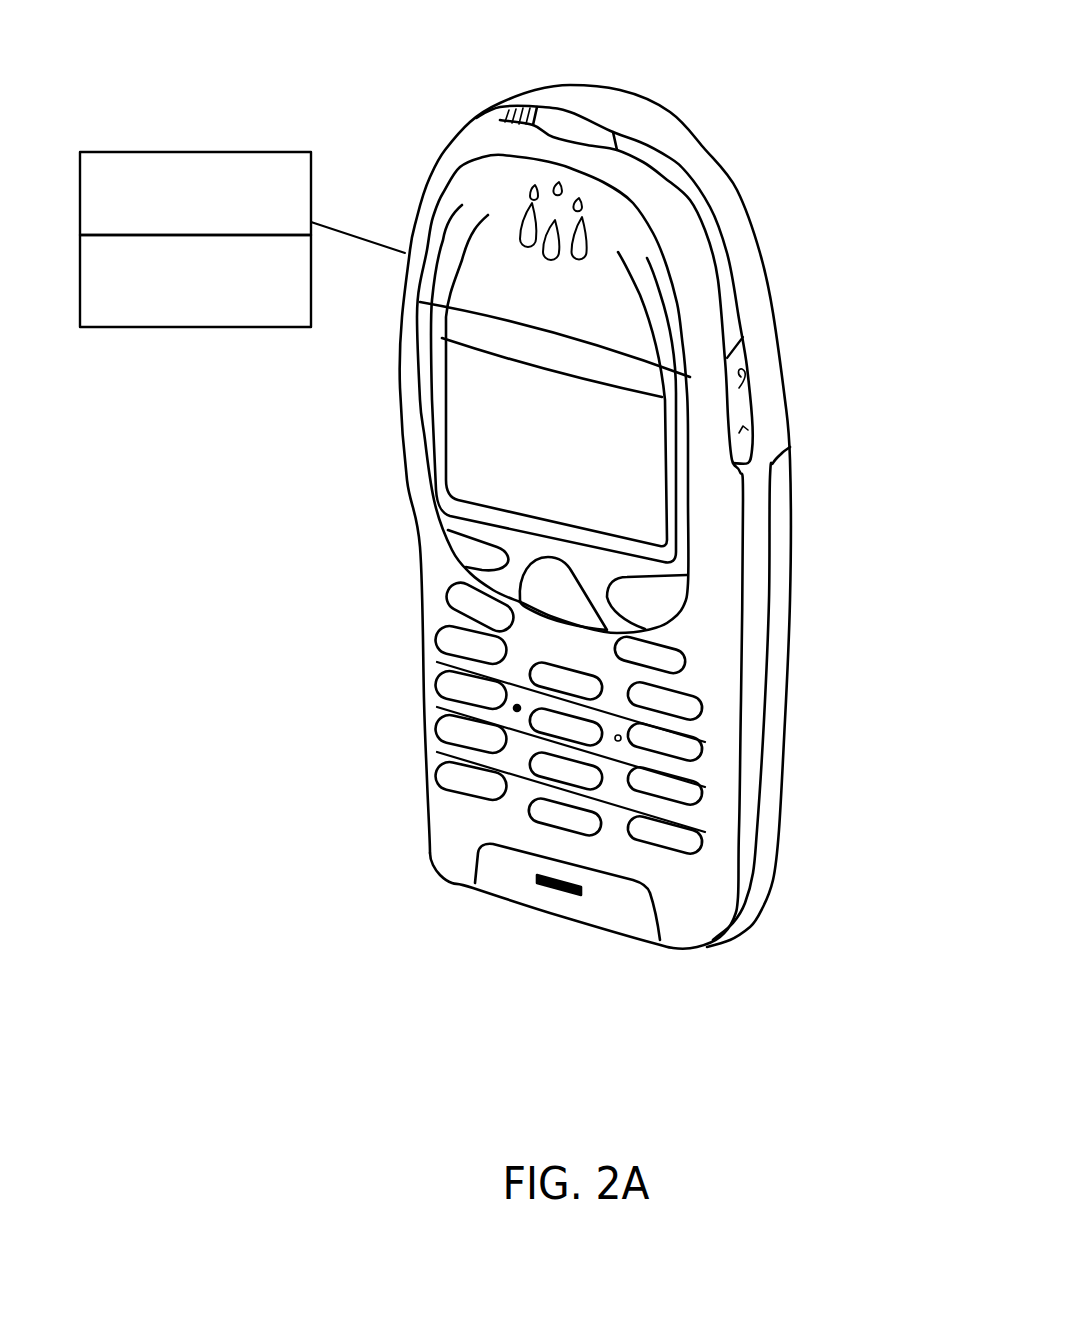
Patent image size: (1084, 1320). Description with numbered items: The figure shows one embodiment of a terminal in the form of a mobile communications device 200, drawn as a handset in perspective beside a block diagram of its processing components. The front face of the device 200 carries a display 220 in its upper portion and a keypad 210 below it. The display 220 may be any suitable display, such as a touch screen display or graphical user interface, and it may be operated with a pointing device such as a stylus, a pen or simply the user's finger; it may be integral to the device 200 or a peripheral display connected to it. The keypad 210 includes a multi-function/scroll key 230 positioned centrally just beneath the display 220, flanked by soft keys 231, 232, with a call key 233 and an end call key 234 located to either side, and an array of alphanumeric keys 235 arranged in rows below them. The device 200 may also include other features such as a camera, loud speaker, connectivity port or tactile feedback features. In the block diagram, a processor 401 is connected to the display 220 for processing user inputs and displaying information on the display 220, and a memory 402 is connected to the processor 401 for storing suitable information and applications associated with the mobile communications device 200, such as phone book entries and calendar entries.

The mobile communications device 200 is at (596, 533).
The keypad 210 is at (687, 862).
The display 220 is at (623, 477).
The multi-function/scroll key 230 is at (573, 597).
The soft key 231 is at (473, 548).
The soft key 232 is at (657, 598).
The call key 233 is at (472, 598).
The end call key 234 is at (657, 653).
The alphanumeric keys 235 is at (482, 784).
The processor 401 is at (192, 152).
The memory 402 is at (192, 327).